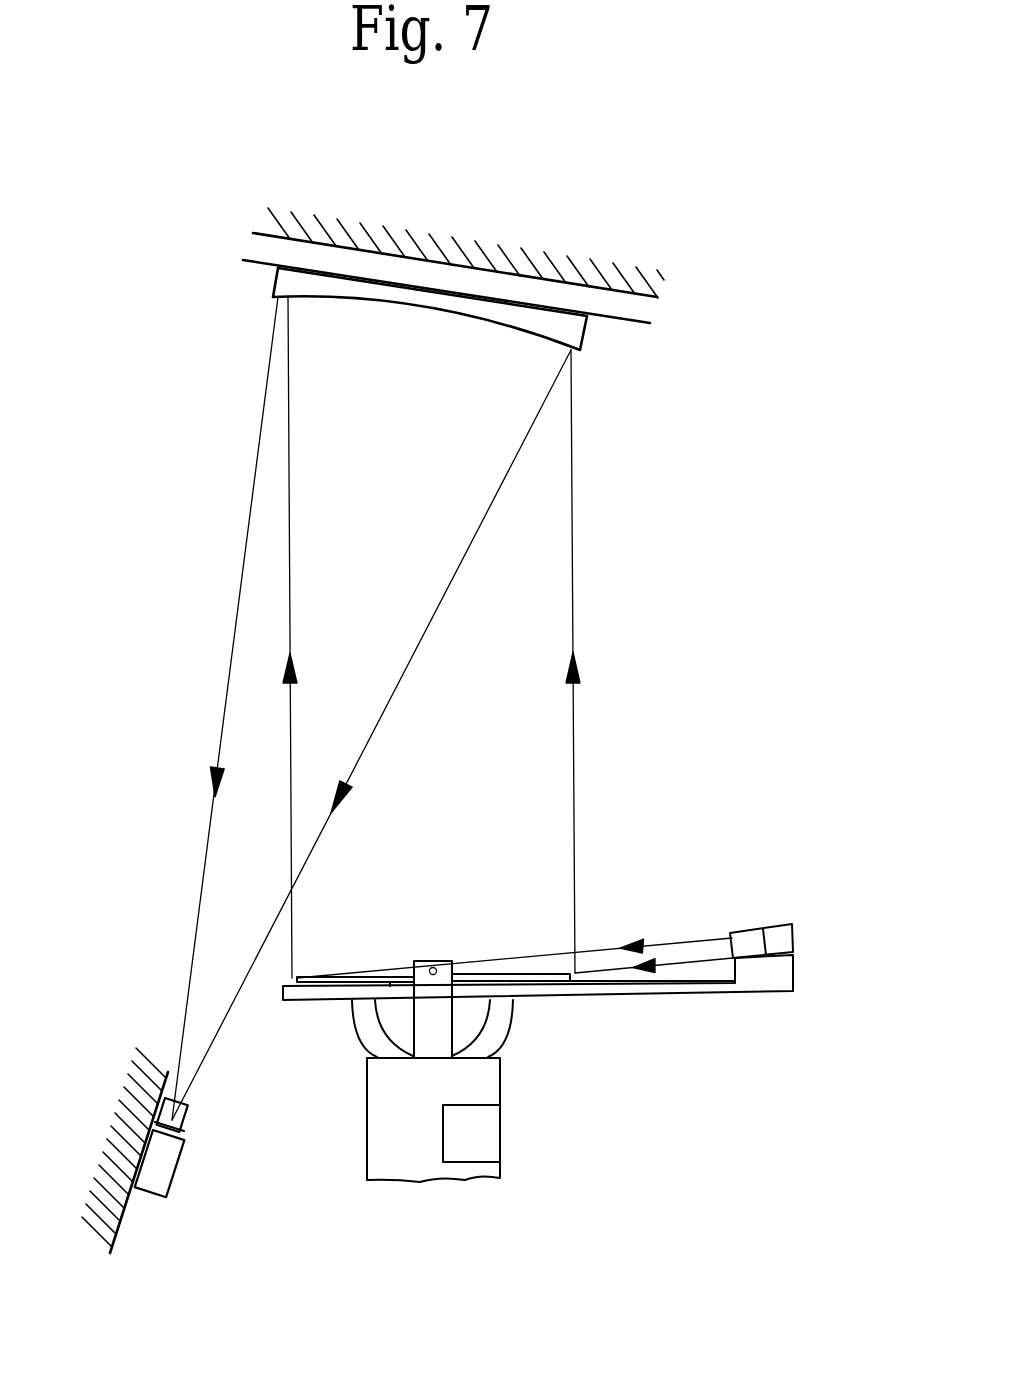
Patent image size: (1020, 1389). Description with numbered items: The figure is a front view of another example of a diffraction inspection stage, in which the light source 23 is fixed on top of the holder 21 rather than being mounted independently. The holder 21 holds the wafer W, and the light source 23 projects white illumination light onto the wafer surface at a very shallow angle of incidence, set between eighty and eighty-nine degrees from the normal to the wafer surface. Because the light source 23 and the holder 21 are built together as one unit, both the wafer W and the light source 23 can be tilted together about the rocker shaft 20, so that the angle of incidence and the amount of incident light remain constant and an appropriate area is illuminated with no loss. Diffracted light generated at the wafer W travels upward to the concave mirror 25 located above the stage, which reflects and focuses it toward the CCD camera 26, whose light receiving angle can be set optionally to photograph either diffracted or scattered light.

The concave mirror 25 is at (585, 325).
The light source 23 is at (752, 933).
The wafer W is at (528, 973).
The holder 21 is at (602, 997).
The rocker shaft 20 is at (433, 977).
The CCD camera 26 is at (170, 1162).